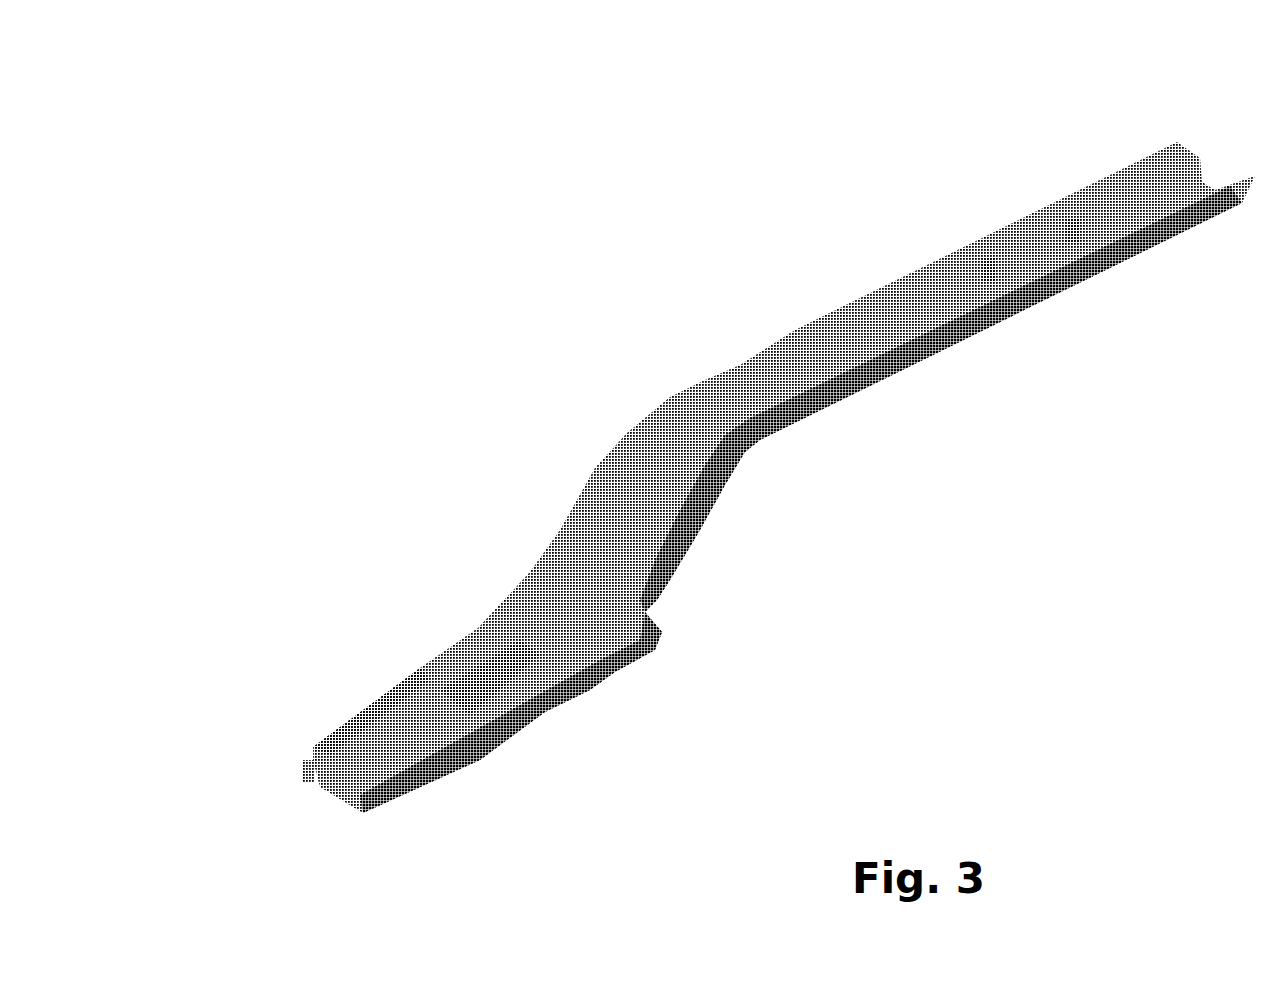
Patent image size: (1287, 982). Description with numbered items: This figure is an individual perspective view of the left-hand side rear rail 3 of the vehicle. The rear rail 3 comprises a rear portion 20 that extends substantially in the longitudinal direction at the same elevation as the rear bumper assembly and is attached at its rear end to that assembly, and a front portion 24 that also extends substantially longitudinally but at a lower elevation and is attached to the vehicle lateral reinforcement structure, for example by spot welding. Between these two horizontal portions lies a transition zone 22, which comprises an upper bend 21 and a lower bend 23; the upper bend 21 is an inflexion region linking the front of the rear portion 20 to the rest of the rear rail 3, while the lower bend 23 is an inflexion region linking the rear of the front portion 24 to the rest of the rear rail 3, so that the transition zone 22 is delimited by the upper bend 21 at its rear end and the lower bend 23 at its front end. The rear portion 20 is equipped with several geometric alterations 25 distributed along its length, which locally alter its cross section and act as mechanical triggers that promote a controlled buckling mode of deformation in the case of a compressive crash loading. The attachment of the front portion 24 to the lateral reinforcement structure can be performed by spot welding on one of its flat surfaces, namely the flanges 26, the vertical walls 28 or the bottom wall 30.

The rear rail 3 is at (548, 322).
The rear portion 20 is at (1033, 290).
The upper bend 21 is at (755, 442).
The transition zone 22 is at (687, 532).
The lower bend 23 is at (640, 622).
The front portion 24 is at (545, 712).
The geometric alterations 25 is at (990, 283).
The flanges 26 is at (400, 703).
The vertical walls 28 is at (353, 753).
The bottom wall 30 is at (482, 720).